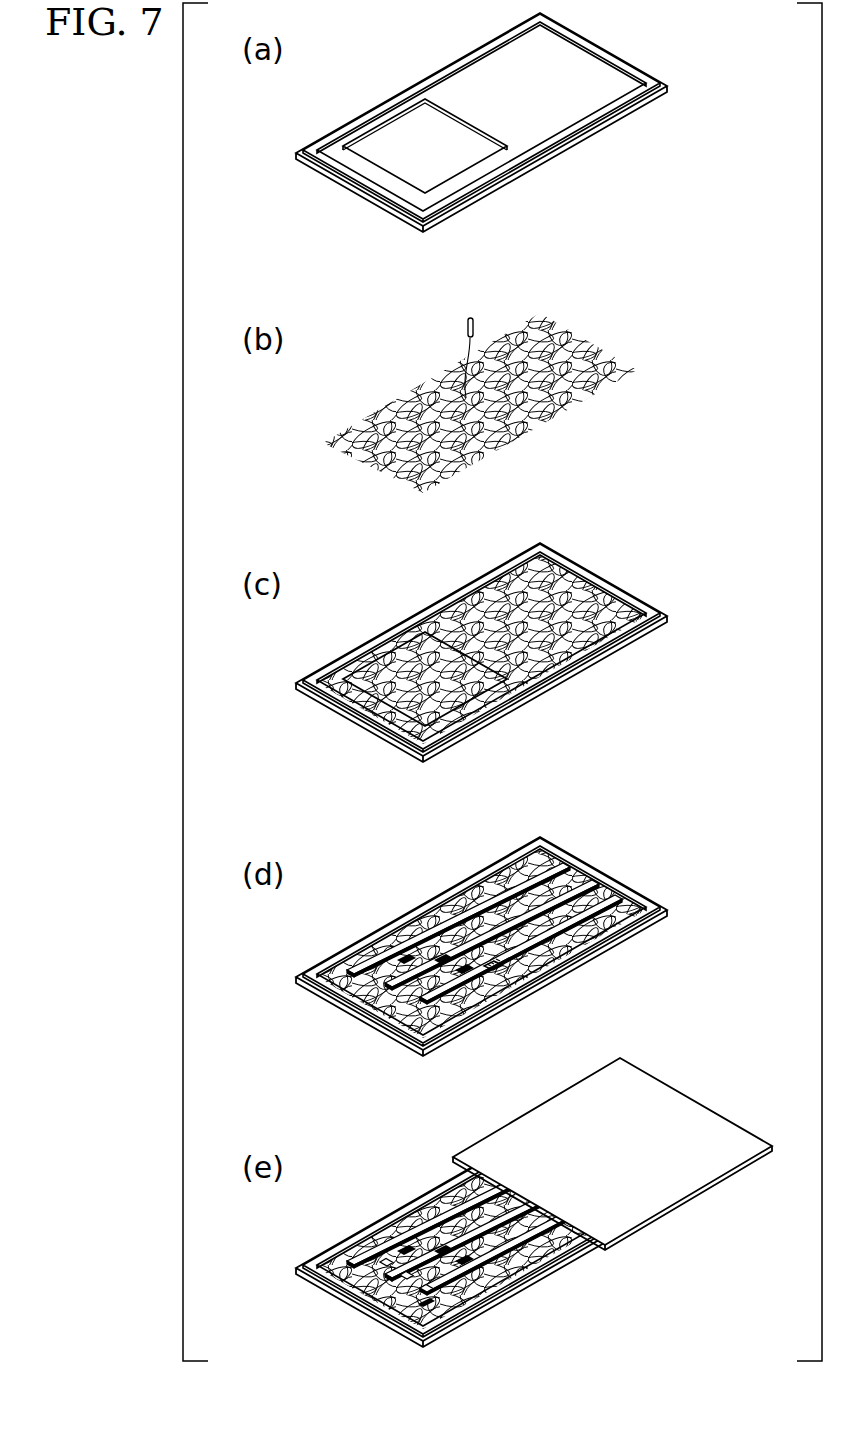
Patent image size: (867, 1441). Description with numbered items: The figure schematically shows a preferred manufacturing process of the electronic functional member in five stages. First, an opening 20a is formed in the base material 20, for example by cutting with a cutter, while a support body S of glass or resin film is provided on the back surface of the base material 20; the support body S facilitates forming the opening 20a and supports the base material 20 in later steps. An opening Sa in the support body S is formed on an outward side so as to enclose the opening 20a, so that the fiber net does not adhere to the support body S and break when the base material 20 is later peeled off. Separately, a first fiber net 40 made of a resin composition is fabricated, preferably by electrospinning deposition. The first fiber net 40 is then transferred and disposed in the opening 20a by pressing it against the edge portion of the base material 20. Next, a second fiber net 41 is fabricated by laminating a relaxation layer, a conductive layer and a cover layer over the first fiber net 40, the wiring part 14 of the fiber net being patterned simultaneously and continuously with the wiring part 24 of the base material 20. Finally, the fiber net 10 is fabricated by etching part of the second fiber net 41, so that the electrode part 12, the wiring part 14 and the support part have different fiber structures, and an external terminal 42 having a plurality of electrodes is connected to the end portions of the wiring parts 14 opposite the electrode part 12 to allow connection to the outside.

The support body S is at (660, 84).
The base material 20 is at (588, 58).
The opening 20a is at (394, 126).
The opening Sa is at (358, 153).
The first fiber net 40 is at (598, 366).
The wiring part 24 is at (537, 930).
The wiring part 14 is at (463, 968).
The second fiber net 41 is at (480, 978).
The electrode part 12 is at (433, 1257).
The fiber net 10 is at (427, 1303).
The external terminal 42 is at (673, 1165).